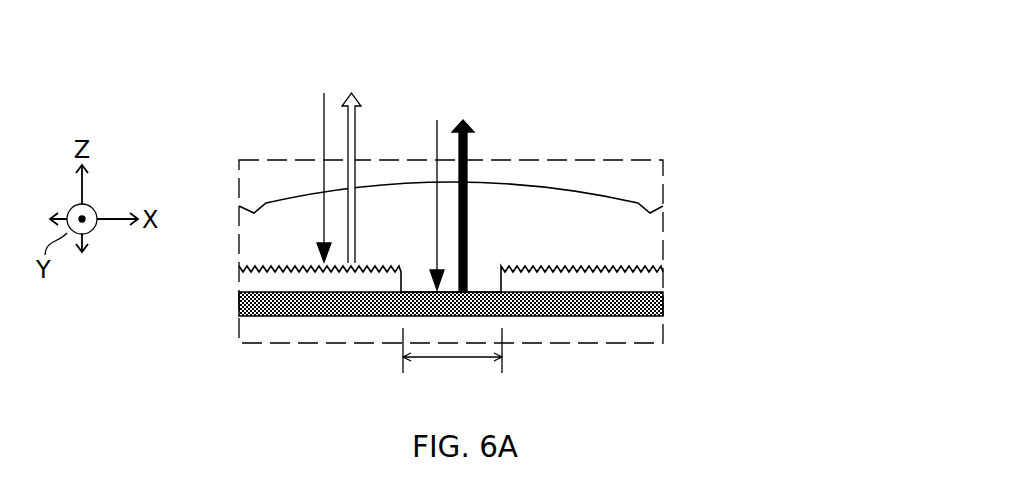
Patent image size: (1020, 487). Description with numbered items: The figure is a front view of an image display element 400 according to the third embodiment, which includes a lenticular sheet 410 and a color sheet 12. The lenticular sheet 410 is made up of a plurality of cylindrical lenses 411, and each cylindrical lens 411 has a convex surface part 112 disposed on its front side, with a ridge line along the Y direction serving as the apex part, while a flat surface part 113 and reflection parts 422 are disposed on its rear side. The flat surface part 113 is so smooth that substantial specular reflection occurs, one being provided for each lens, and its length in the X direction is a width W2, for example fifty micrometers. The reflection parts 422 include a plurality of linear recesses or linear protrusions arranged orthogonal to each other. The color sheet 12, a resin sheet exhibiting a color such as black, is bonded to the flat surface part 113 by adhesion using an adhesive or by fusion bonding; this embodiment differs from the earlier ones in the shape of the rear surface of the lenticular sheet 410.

The image display element 400 is at (877, 32).
The lenticular sheet 410 is at (663, 243).
The cylindrical lens 411 is at (650, 96).
The convex surface part 112 is at (612, 197).
The color sheet 12 is at (663, 305).
The reflection part 422 is at (348, 265).
The flat surface part 113 is at (480, 291).
The width of flat surface part W2 is at (452, 363).